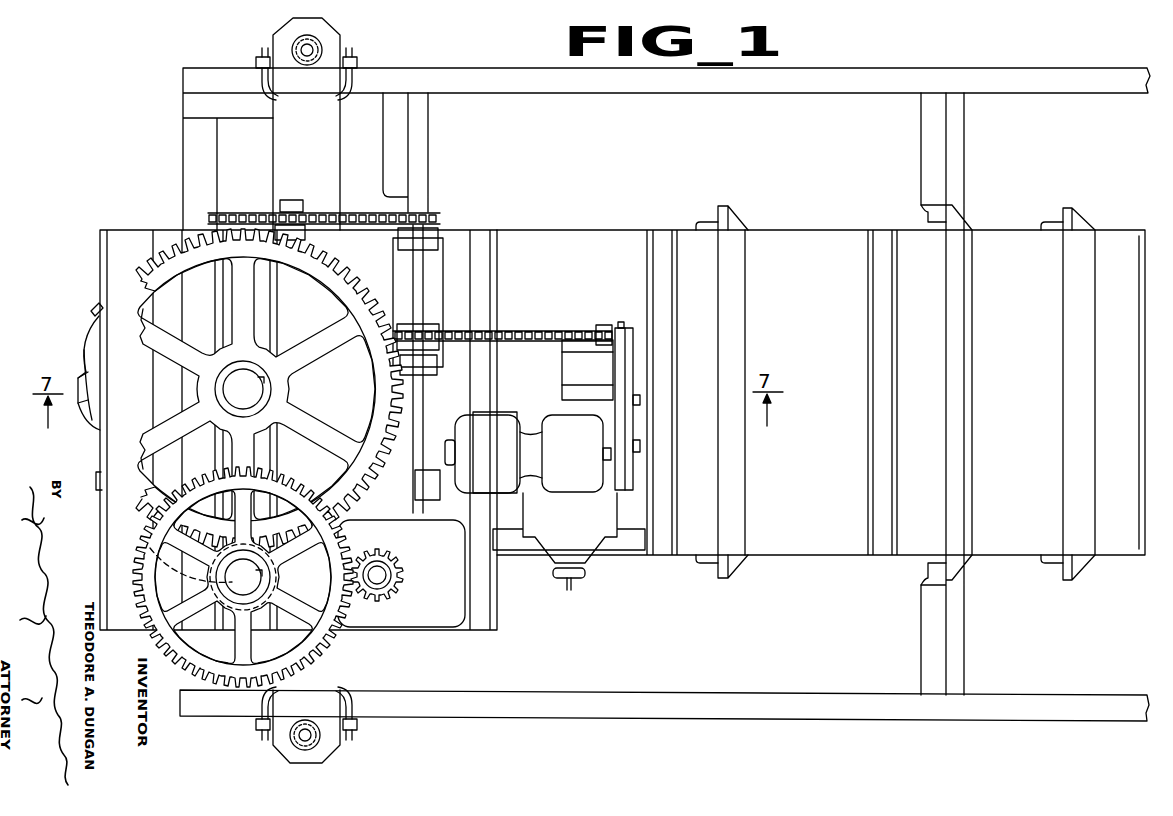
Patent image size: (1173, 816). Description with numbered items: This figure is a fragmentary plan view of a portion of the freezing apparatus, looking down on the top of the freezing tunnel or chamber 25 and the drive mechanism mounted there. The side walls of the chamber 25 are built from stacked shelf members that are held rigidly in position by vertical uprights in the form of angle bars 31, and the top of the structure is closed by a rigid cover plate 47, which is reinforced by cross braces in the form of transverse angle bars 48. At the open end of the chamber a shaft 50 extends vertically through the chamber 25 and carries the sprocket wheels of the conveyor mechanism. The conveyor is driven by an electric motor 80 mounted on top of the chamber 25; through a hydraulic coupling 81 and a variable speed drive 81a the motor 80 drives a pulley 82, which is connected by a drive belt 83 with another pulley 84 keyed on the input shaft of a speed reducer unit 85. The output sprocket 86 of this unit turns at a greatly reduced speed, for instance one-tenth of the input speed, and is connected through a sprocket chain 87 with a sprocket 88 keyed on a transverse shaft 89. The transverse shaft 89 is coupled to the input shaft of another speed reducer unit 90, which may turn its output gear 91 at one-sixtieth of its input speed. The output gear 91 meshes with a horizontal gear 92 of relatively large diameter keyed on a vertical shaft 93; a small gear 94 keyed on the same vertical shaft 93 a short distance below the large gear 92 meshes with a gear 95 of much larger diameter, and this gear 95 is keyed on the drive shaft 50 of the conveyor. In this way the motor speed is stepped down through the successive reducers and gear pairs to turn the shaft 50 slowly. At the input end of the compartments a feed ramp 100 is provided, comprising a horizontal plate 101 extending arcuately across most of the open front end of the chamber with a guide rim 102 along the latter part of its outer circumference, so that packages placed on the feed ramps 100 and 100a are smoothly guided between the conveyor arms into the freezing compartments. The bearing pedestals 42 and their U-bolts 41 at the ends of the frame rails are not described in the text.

The freezing tunnel or chamber 25 is at (821, 415).
The uprights in the form of angle bars 31 is at (707, 222).
The U-bolts 41 is at (258, 63).
The bearing pedestal 42 is at (320, 45).
The cover plate 47 is at (810, 572).
The transverse angle bars 48 is at (735, 222).
The shaft 50 is at (262, 388).
The electric motor 80 is at (482, 452).
The hydraulic coupling 81 is at (565, 453).
The variable speed drive 81a is at (569, 541).
The pulley 82 is at (641, 448).
The drive belt 83 is at (641, 400).
The pulley 84 is at (640, 350).
The speed reducer unit 85 is at (587, 370).
The output sprocket 86 is at (596, 326).
The sprocket chain 87 is at (498, 328).
The sprocket 88 is at (435, 328).
The transverse shaft 89 is at (418, 262).
The speed reducer unit 90 is at (401, 573).
The output gear 91 is at (392, 570).
The horizontal gear 92 is at (242, 577).
The vertical shaft 93 is at (235, 570).
The small gear 94 is at (173, 555).
The gear 95 is at (262, 351).
The feed ramp 100 is at (98, 340).
The feed ramp 100a is at (82, 372).
The horizontal plate 101 is at (88, 330).
The guide rim 102 is at (92, 306).